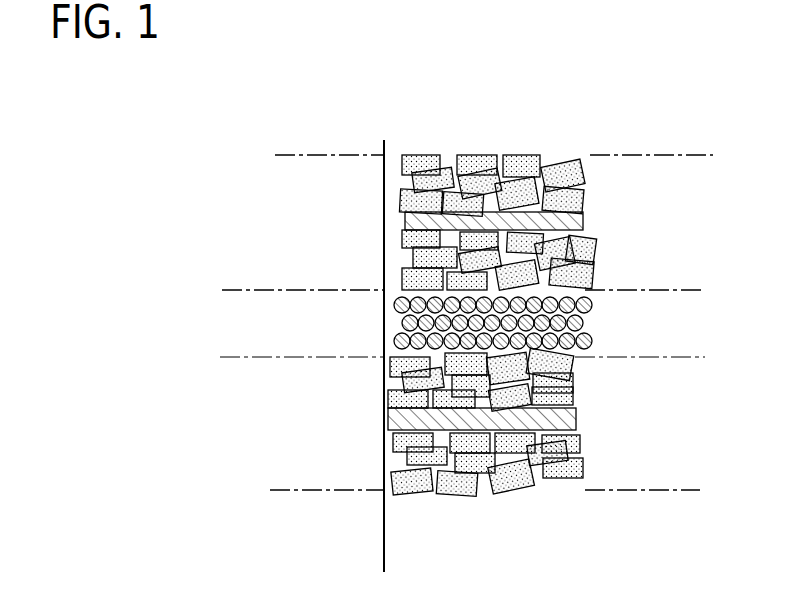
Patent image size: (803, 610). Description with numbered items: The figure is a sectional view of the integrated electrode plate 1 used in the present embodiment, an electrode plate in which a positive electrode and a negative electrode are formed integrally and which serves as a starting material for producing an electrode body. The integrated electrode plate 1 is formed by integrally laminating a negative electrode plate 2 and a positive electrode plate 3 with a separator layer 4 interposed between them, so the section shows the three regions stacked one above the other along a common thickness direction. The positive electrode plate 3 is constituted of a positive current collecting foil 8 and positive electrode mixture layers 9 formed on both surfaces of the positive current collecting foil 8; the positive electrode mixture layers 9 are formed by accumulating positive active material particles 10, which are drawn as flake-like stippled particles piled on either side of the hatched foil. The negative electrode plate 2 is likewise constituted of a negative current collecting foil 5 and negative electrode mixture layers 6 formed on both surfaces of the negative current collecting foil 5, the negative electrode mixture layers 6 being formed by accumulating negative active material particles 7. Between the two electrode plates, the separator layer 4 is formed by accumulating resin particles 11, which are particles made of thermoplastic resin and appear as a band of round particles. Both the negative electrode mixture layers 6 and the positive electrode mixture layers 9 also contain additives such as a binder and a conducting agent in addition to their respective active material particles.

The integrated electrode plate 1 is at (628, 118).
The negative electrode plate 2 is at (283, 357).
The positive electrode plate 3 is at (283, 155).
The separator layer 4 is at (243, 245).
The negative current collecting foil 5 is at (576, 418).
The negative electrode mixture layers 6 is at (382, 360).
The negative active material particles 7 is at (510, 478).
The positive current collecting foil 8 is at (583, 222).
The positive electrode mixture layers 9 is at (382, 160).
The positive active material particles 10 is at (423, 155).
The resin particles 11 is at (390, 323).